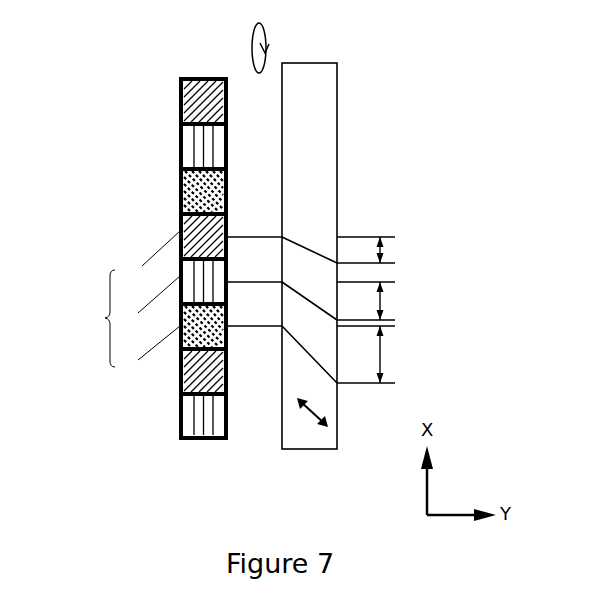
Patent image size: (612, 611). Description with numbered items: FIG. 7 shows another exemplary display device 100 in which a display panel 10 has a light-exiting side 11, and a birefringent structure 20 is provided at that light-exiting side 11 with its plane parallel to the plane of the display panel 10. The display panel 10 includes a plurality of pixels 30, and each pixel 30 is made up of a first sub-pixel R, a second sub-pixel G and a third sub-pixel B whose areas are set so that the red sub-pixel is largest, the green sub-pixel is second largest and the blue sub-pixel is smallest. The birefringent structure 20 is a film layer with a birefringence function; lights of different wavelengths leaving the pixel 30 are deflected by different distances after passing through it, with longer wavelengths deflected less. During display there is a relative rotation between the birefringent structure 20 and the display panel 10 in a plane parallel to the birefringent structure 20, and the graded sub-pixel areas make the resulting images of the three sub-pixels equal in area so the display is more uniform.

The display device 100 is at (392, 13).
The display panel 10 is at (193, 440).
The light-exiting side 11 is at (228, 395).
The birefringent structure 20 is at (310, 449).
The pixel 30 is at (107, 301).